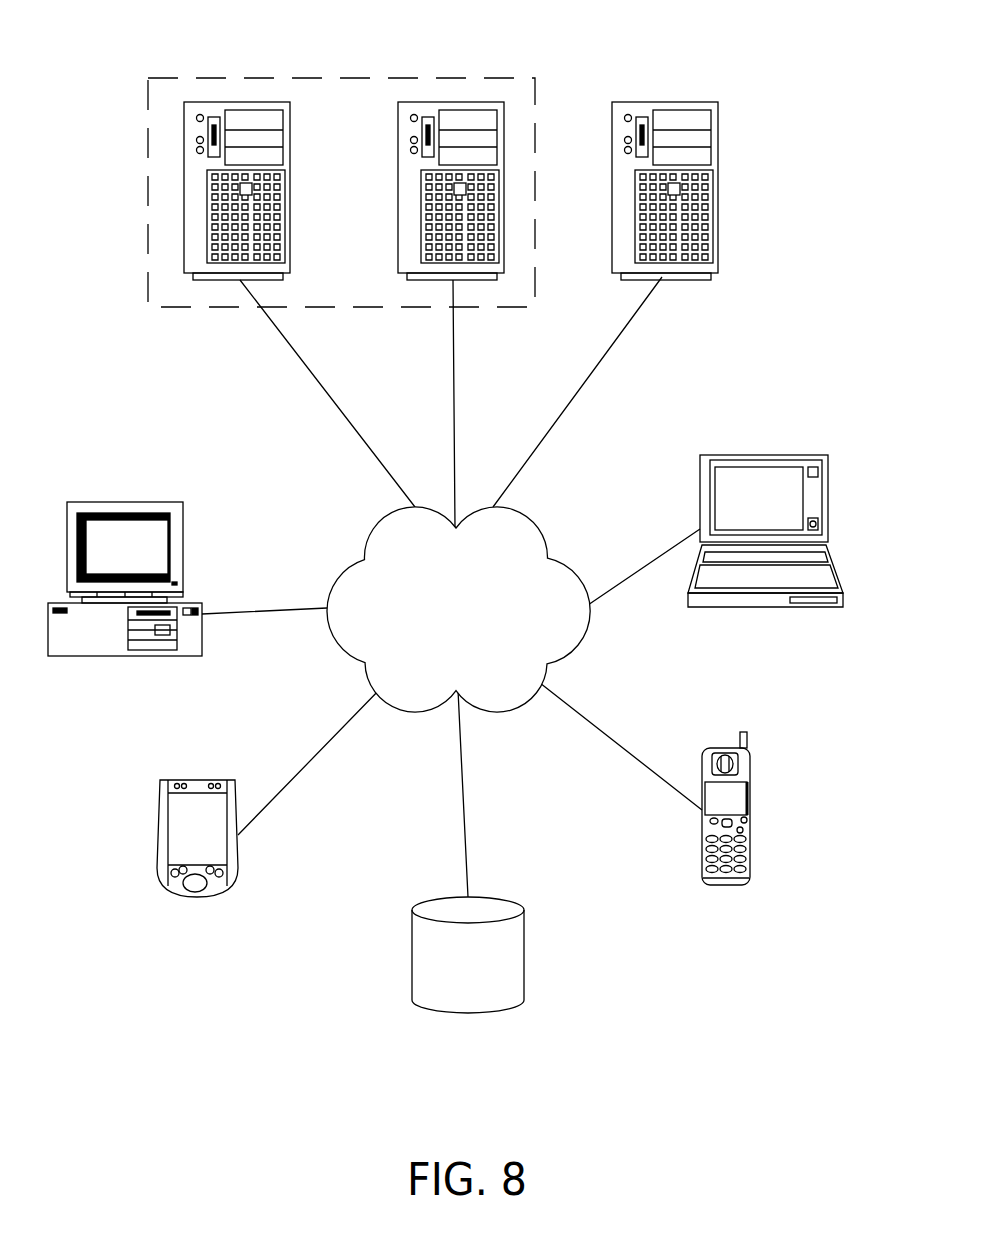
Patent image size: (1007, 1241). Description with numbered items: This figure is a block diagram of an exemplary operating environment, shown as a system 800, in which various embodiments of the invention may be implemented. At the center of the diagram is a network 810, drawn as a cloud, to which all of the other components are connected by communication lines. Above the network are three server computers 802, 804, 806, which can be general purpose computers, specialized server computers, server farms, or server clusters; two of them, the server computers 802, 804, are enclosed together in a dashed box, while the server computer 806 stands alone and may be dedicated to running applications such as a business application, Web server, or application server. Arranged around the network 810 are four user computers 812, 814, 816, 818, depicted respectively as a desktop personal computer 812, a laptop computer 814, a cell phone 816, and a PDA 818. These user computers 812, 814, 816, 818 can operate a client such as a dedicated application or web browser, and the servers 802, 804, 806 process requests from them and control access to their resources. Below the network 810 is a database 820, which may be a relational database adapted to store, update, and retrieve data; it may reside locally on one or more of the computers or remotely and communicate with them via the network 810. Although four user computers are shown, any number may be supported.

The system 800 is at (812, 104).
The server computer 802 is at (220, 102).
The server computer 804 is at (448, 102).
The server computer 806 is at (718, 185).
The network 810 is at (458, 609).
The user computer 812 is at (120, 502).
The user computer 814 is at (760, 455).
The user computer 816 is at (723, 887).
The user computer 818 is at (197, 898).
The database 820 is at (468, 955).